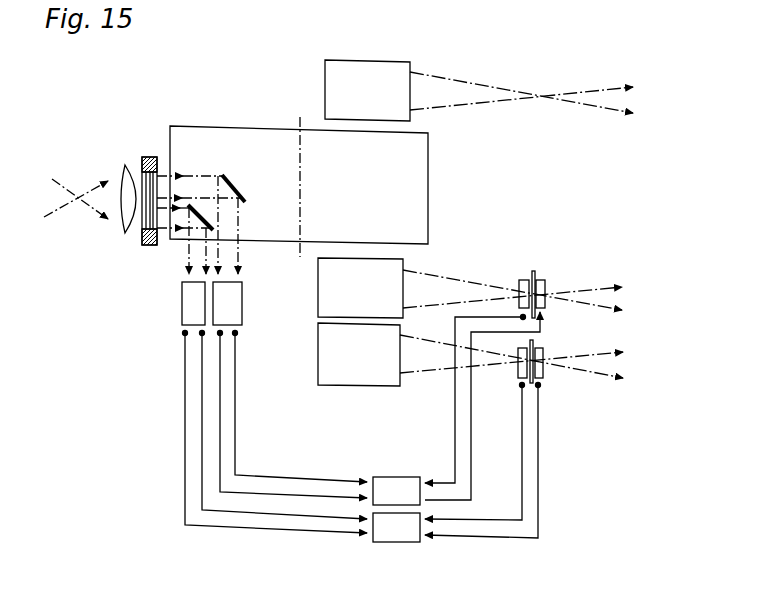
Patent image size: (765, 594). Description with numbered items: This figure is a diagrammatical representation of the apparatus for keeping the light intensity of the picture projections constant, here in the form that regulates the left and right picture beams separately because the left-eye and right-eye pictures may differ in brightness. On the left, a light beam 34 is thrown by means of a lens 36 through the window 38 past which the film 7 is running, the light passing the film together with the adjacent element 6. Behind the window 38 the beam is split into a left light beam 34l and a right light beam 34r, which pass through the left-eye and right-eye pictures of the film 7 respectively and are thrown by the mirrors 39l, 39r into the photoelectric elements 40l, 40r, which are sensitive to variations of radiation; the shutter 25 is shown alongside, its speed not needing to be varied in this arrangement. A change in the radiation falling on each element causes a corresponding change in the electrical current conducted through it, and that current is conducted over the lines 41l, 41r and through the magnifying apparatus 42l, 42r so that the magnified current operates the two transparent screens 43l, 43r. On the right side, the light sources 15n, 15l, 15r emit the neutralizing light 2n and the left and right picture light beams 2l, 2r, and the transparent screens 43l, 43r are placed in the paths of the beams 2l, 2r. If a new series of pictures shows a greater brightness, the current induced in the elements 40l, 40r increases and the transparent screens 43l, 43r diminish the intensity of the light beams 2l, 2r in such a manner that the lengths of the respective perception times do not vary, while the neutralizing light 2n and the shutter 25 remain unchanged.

The light beam 34 is at (72, 199).
The lens 36 is at (125, 233).
The window 38 is at (143, 185).
The film 7 is at (143, 238).
The analyzer 6 is at (153, 246).
The shutter 25 is at (299, 187).
The right mirror 39r is at (192, 204).
The left mirror 39l is at (240, 184).
The right light beam 34r is at (181, 241).
The left light beam 34l is at (240, 225).
The right photoelectric element 40r is at (182, 320).
The left photoelectric element 40l is at (254, 323).
The left magnifying apparatus 42l is at (396, 491).
The right magnifying apparatus 42r is at (396, 527).
The central light source 15n is at (367, 90).
The left light source 15l is at (360, 288).
The right light source 15r is at (359, 354).
The neutralizing light 2n is at (525, 93).
The left light beam 2l is at (520, 291).
The right light beam 2r is at (520, 359).
The left transparent screen 43l is at (535, 273).
The right transparent screen 43r is at (533, 343).
The left control lines 41l is at (471, 432).
The right control lines 41r is at (543, 459).